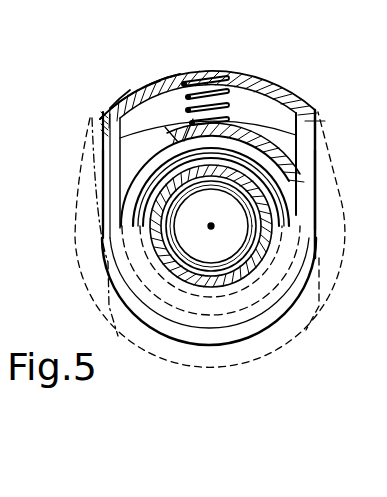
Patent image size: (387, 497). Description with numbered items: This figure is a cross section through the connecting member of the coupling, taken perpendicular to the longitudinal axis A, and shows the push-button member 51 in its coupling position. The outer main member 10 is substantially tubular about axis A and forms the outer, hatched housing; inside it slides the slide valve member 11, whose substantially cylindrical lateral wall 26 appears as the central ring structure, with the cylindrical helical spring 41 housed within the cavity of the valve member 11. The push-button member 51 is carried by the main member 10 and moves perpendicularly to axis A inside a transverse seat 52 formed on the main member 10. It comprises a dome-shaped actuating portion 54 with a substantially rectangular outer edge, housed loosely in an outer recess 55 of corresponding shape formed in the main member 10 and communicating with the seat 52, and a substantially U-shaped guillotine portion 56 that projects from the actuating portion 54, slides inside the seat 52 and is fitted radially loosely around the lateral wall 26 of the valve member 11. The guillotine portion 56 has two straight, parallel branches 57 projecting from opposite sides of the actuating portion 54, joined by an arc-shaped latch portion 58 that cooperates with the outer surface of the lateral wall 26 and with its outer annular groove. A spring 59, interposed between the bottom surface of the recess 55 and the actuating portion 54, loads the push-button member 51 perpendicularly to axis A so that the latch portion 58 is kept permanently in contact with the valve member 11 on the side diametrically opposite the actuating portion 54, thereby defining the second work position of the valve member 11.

The outer main member 10 is at (88, 163).
The slide valve member 11 is at (267, 167).
The lateral wall 26 is at (237, 177).
The cylindrical helical spring 41 is at (167, 231).
The push-button member 51 is at (145, 72).
The transverse seat 52 is at (118, 338).
The dome-shaped actuating portion 54 is at (163, 80).
The outer recess 55 is at (120, 83).
The guillotine portion 56 is at (267, 307).
The branches 57 is at (112, 188).
The arc-shaped latch portion 58 is at (178, 327).
The spring 59 is at (205, 78).
The longitudinal axis A is at (211, 232).